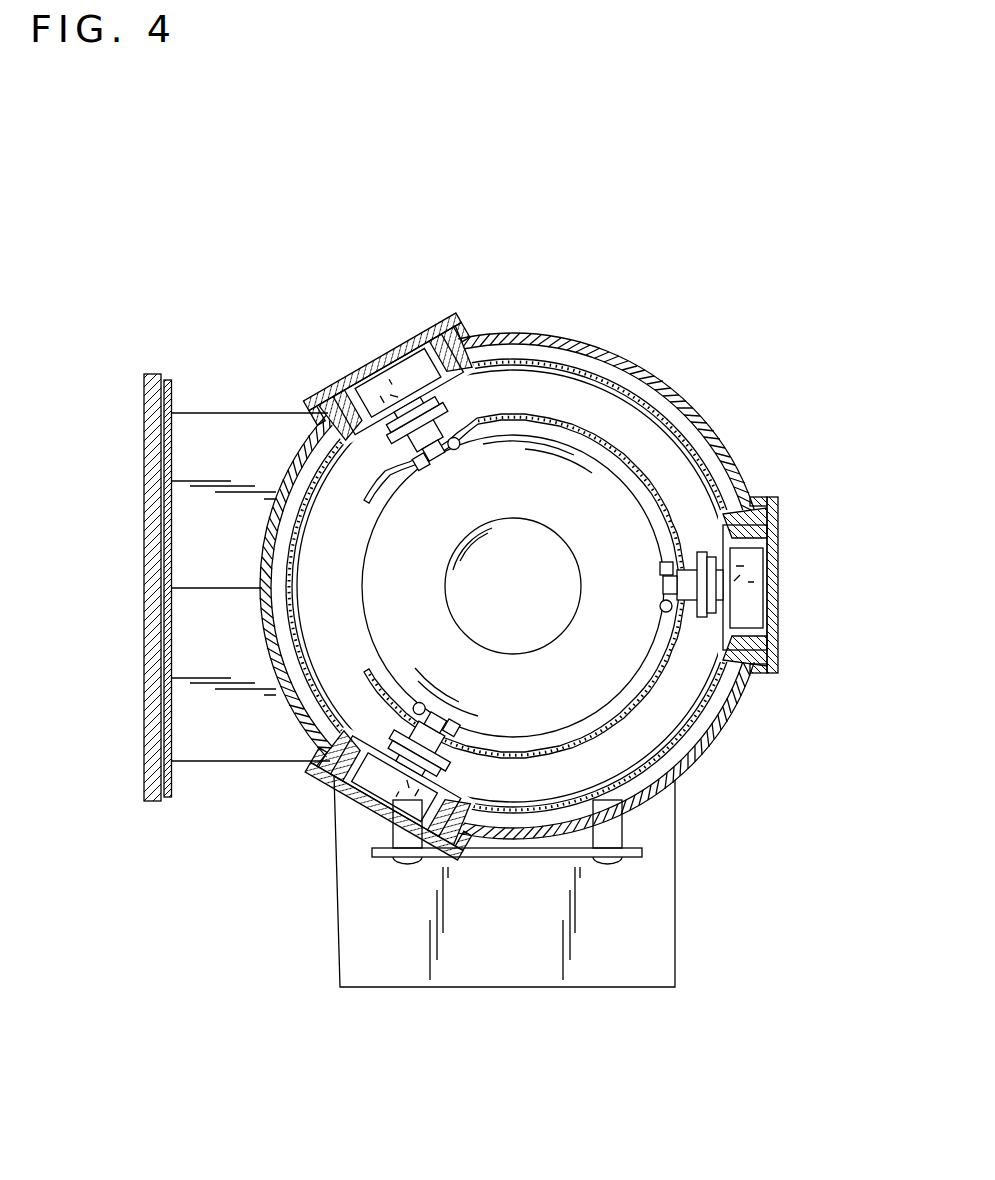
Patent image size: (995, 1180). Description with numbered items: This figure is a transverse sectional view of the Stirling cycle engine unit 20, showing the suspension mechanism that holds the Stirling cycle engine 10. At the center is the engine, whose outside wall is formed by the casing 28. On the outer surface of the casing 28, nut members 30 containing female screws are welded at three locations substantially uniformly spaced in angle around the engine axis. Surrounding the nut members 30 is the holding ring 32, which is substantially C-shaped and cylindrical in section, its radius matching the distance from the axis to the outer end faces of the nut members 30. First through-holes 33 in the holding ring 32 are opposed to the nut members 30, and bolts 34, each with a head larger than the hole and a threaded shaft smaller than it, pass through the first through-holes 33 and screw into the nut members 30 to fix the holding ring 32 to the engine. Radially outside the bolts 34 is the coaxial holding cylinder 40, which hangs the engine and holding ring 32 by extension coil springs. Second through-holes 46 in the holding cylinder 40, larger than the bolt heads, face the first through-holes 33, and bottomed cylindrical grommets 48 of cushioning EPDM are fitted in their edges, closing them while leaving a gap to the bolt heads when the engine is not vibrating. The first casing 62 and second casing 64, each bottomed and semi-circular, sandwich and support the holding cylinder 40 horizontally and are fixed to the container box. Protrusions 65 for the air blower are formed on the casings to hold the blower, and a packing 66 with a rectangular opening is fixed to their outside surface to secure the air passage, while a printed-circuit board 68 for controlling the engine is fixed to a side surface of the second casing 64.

The Stirling cycle engine 10 is at (540, 578).
The Stirling cycle engine unit 20 is at (467, 602).
The casing 28 is at (575, 440).
The nut member 30 is at (395, 463).
The holding ring 32 is at (632, 447).
The first through-hole 33 is at (417, 410).
The bolt 34 is at (335, 412).
The holding cylinder 40 is at (628, 380).
The second through-hole 46 is at (378, 393).
The grommet 48 is at (338, 387).
The first casing 62 is at (522, 338).
The second casing 64 is at (700, 757).
The protrusion for the air blower 65 is at (240, 762).
The packing 66 is at (163, 578).
The printed-circuit board 68 is at (510, 858).